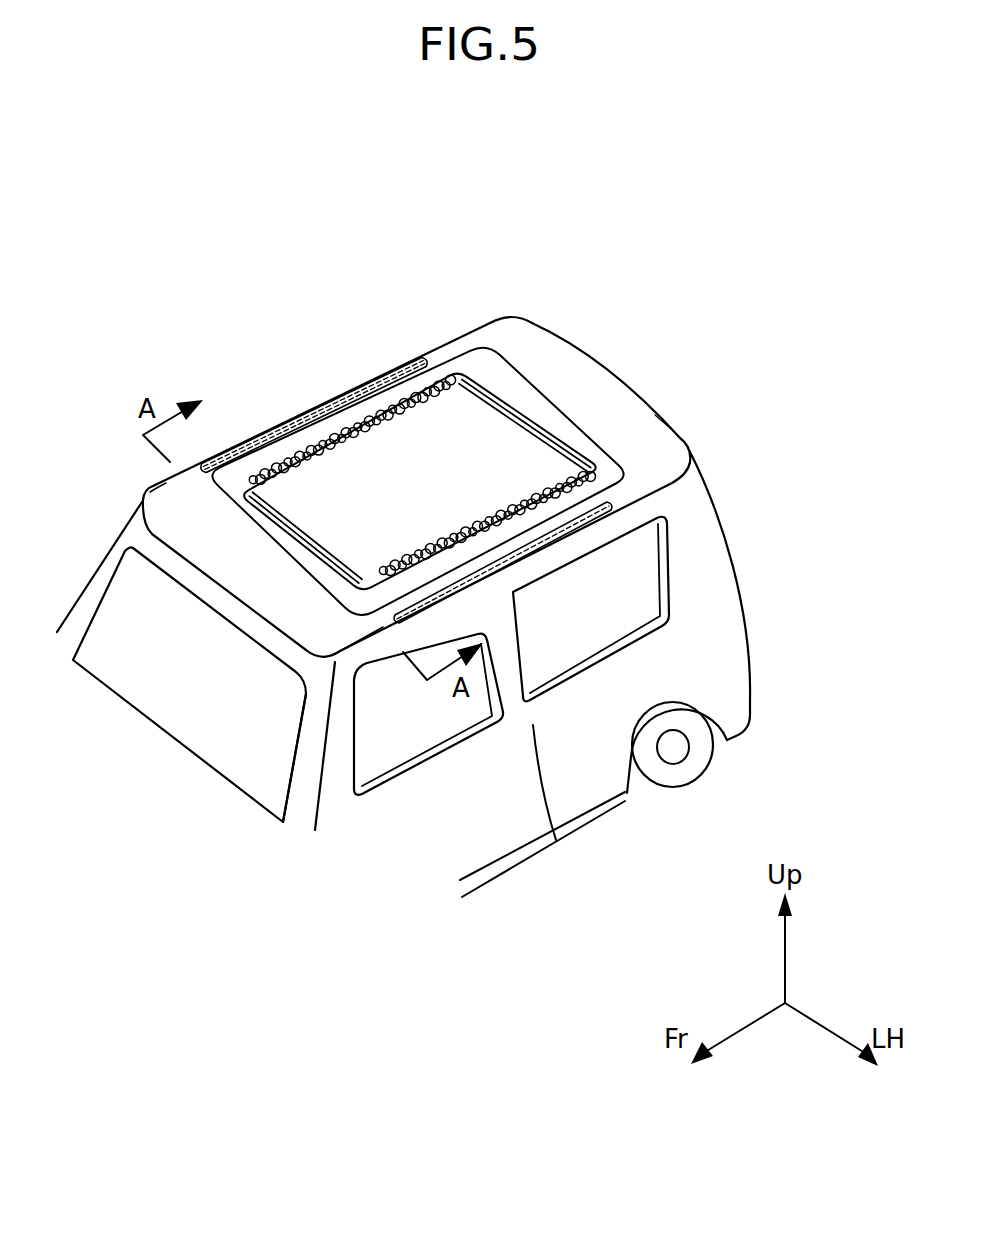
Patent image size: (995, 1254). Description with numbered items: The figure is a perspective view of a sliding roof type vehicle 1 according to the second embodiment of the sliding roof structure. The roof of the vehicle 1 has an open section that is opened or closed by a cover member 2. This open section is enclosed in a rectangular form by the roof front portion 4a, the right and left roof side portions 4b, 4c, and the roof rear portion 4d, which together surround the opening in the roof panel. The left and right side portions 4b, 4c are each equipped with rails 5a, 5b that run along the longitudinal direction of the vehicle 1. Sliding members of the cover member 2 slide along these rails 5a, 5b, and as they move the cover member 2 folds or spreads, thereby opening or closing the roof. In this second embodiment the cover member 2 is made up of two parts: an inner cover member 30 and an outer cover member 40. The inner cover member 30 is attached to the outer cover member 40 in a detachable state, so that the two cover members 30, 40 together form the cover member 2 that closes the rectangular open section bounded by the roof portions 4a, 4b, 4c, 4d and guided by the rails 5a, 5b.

The sliding roof type vehicle 1 is at (585, 306).
The cover member 2 is at (413, 273).
The inner cover member 30 is at (401, 440).
The outer cover member 40 is at (318, 418).
The roof front portion 4a is at (270, 615).
The roof side portion 4b is at (377, 643).
The roof side portion 4c is at (157, 508).
The roof rear portion 4d is at (640, 423).
The rail 5a is at (544, 548).
The rail 5b is at (247, 440).